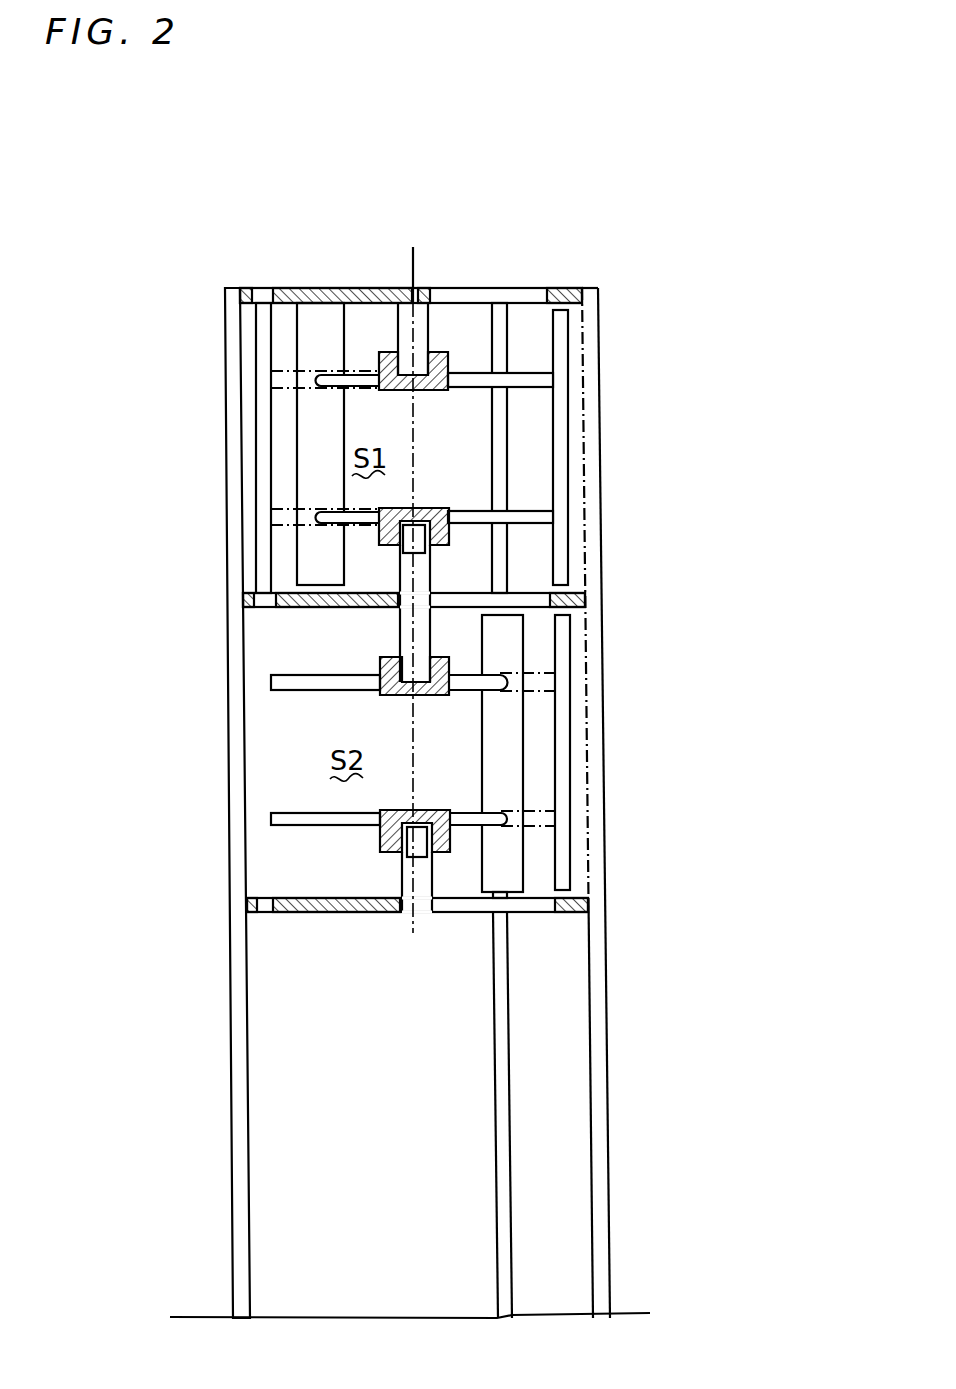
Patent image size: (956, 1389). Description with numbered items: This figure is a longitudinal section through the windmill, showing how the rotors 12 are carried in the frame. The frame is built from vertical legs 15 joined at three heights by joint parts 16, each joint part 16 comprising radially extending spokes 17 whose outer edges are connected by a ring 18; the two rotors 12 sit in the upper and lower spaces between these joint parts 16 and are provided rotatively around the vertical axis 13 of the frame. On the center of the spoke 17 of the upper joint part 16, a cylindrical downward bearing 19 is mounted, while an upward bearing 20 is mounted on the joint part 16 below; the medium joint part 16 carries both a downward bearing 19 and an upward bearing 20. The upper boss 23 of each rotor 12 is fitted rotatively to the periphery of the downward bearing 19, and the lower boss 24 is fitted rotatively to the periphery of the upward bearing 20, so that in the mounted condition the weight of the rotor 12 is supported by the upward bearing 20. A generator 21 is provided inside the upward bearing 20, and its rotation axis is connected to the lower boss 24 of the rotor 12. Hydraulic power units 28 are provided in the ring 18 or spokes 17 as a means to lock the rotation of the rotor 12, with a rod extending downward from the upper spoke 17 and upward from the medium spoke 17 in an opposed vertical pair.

The rotor 12 is at (573, 412).
The vertical axis 13 is at (413, 262).
The vertical leg 15 is at (240, 1022).
The joint part 16 is at (378, 224).
The spoke 17 is at (296, 290).
The ring 18 is at (243, 291).
The downward bearing 19 is at (398, 330).
The upward bearing 20 is at (422, 572).
The generator 21 is at (432, 548).
The upper boss 23 is at (440, 353).
The lower boss 24 is at (433, 509).
The hydraulic power unit 28 is at (260, 313).